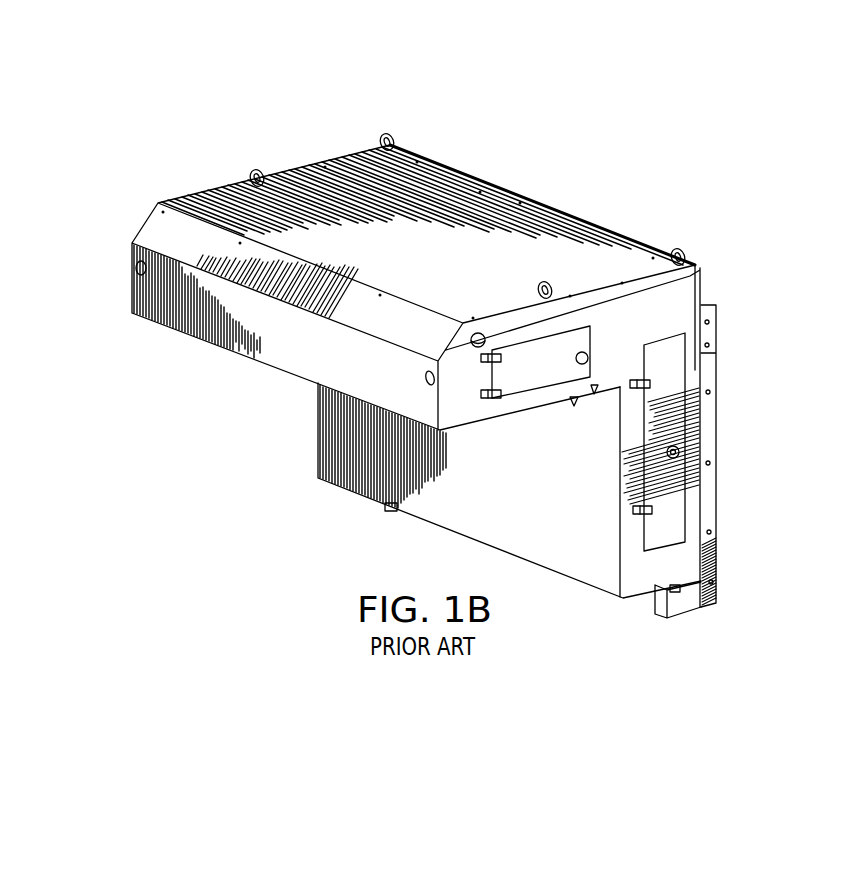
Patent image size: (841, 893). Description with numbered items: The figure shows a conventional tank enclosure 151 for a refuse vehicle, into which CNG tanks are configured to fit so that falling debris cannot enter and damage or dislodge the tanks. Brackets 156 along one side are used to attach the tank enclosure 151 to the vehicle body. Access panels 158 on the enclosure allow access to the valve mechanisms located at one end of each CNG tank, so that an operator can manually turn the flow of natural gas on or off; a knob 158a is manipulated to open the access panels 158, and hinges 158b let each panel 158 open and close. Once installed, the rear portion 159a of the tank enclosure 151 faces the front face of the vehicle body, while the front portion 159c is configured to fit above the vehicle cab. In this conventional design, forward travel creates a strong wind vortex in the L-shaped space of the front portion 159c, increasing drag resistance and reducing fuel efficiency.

The tank enclosure 151 is at (655, 192).
The brackets 156 is at (712, 487).
The access panels 158 is at (583, 338).
The knob 158a is at (578, 406).
The hinges 158b is at (650, 384).
The rear portion 159a is at (533, 200).
The front portion 159c is at (318, 184).